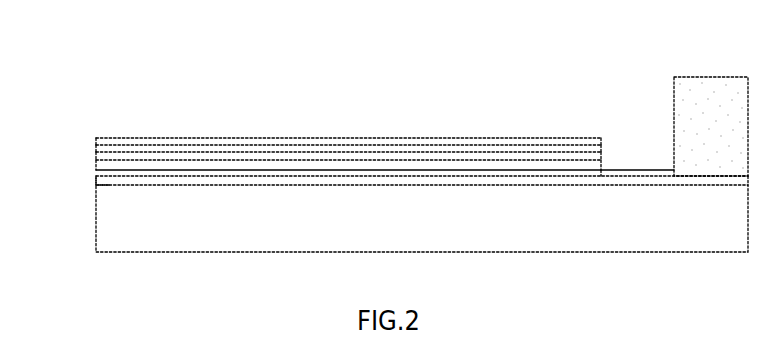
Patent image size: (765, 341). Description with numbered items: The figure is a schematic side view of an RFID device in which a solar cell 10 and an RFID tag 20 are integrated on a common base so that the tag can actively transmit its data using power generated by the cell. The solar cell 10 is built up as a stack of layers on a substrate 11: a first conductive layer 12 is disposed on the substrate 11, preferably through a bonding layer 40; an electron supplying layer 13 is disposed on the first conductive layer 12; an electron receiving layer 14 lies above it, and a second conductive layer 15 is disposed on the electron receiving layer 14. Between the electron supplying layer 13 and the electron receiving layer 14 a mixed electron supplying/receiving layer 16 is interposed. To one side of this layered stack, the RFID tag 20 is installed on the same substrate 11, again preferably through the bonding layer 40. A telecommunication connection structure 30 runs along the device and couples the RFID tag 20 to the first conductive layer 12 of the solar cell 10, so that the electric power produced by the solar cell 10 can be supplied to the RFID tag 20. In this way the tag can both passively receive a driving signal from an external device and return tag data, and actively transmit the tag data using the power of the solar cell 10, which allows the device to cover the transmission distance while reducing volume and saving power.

The solar cell 10 is at (335, 120).
The substrate 11 is at (422, 218).
The first conductive layer 12 is at (130, 178).
The electron supplying layer 13 is at (108, 166).
The electron receiving layer 14 is at (128, 157).
The second conductive layer 15 is at (133, 142).
The mixed electron supplying/receiving layer 16 is at (127, 152).
The RFID tag 20 is at (713, 125).
The telecommunication connection structure 30 is at (640, 170).
The bonding layer 40 is at (98, 185).